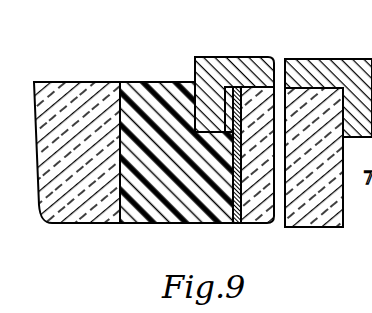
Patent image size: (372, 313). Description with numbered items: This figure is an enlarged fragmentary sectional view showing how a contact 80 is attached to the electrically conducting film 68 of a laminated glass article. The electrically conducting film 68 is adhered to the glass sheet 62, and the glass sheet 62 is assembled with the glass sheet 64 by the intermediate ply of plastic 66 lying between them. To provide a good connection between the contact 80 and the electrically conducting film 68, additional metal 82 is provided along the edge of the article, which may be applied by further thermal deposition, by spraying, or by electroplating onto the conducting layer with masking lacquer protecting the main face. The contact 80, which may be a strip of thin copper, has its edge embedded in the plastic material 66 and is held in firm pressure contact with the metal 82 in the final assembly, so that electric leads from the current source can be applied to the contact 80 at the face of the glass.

The glass sheet 62 is at (258, 198).
The glass sheet 64 is at (83, 198).
The intermediate ply of plastic 66 is at (170, 188).
The electrically conducting film 68 is at (237, 224).
The contact 80 is at (211, 85).
The additional metal 82 is at (229, 88).